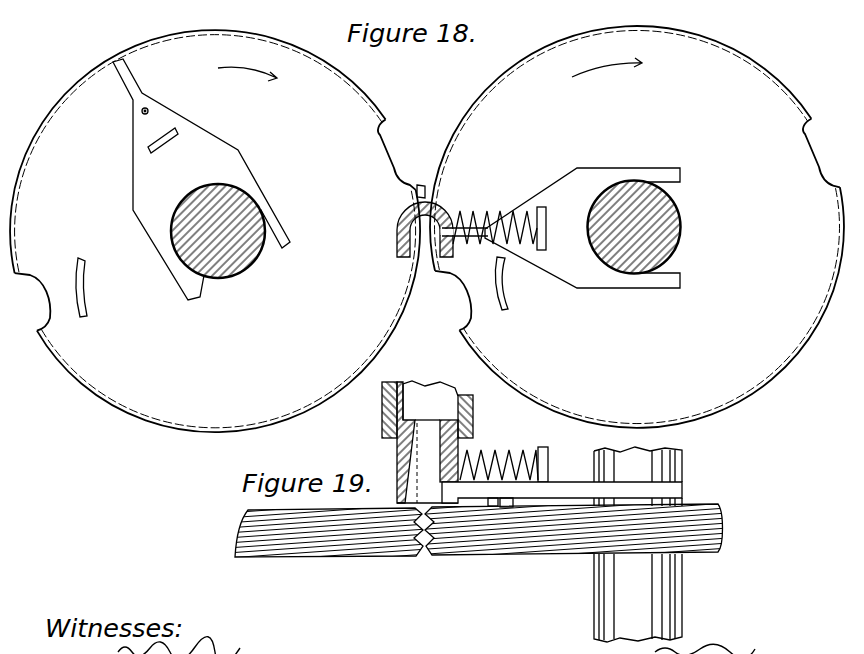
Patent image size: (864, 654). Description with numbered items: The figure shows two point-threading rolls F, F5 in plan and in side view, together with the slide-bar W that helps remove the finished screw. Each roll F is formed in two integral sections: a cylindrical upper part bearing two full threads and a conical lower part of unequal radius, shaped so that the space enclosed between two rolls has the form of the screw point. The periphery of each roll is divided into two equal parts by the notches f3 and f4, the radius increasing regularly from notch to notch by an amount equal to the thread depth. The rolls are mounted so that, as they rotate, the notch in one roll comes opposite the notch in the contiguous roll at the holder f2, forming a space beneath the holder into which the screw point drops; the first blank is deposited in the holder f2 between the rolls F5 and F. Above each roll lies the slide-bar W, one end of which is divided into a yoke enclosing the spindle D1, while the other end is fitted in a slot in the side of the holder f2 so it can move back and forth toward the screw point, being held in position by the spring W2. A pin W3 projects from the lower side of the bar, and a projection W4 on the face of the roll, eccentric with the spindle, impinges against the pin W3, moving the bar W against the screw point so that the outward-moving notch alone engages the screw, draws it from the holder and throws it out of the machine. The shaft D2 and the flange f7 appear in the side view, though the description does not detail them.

In FIG. 18, the point-threading roll F is at (215, 231).
In FIG. 19, the point-threading roll F is at (329, 543).
In FIG. 18, the point-threading roll F5 is at (637, 227).
In FIG. 19, the point-threading roll F5 is at (574, 539).
In FIG. 18, the holder f2 is at (416, 221).
In FIG. 19, the holder f2 is at (417, 480).
In FIG. 18, the notch f3 is at (388, 148).
In FIG. 18, the notch f4 is at (243, 301).
In FIG. 19, the flange of stud f7 is at (473, 422).
In FIG. 18, the slide-bar W is at (396, 179).
In FIG. 19, the slide-bar W is at (562, 492).
In FIG. 18, the spring W2 is at (462, 220).
In FIG. 19, the spring W2 is at (504, 456).
In FIG. 18, the pin W3 is at (152, 108).
In FIG. 19, the pin W3 is at (485, 514).
In FIG. 18, the projection W4 is at (88, 291).
In FIG. 19, the projection W4 is at (510, 514).
In FIG. 18, the spindle D1 is at (426, 230).
In FIG. 19, the shaft D2 is at (638, 544).